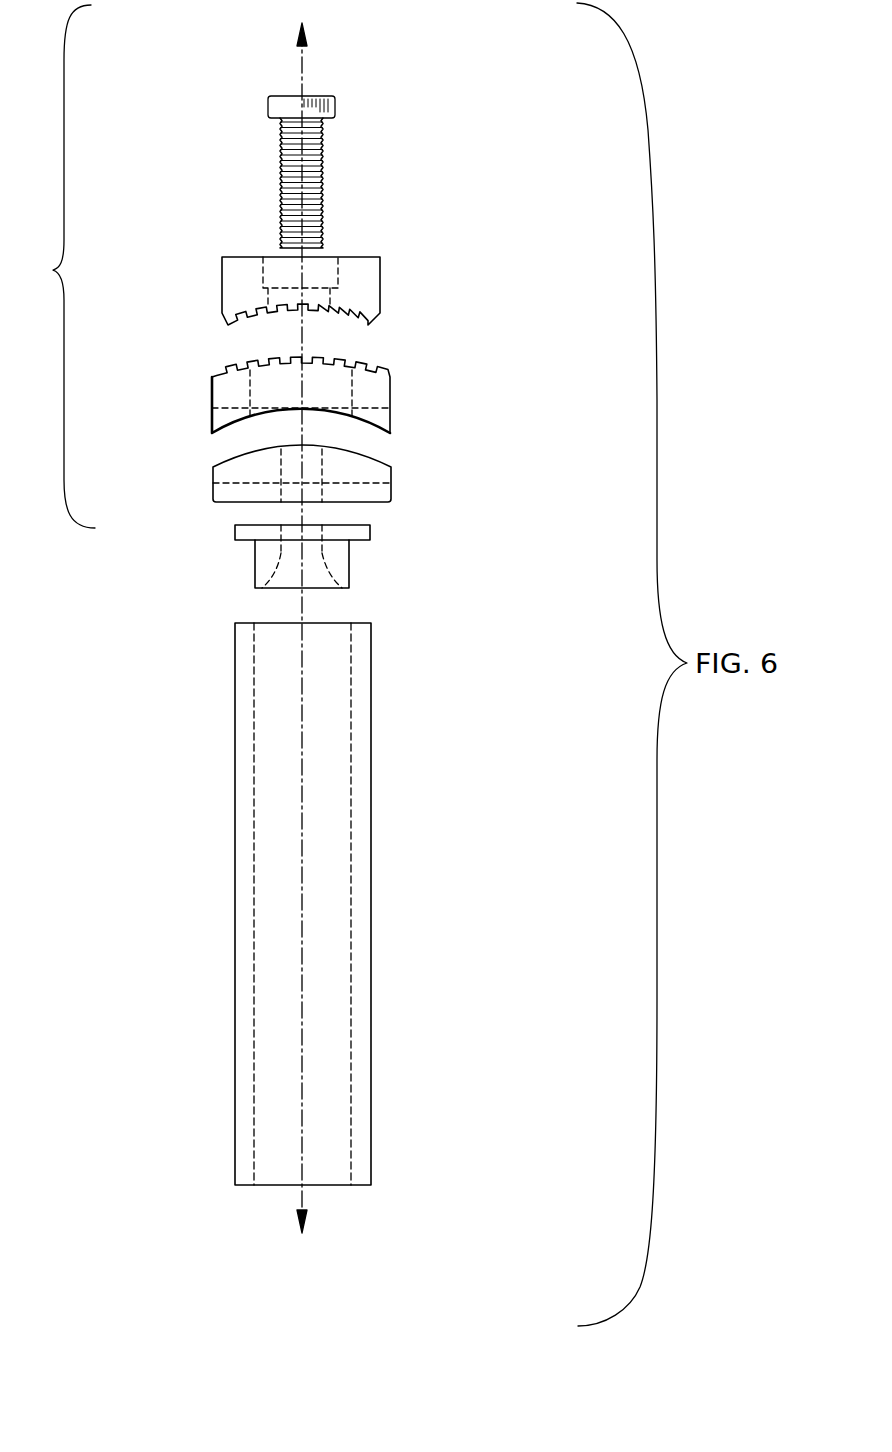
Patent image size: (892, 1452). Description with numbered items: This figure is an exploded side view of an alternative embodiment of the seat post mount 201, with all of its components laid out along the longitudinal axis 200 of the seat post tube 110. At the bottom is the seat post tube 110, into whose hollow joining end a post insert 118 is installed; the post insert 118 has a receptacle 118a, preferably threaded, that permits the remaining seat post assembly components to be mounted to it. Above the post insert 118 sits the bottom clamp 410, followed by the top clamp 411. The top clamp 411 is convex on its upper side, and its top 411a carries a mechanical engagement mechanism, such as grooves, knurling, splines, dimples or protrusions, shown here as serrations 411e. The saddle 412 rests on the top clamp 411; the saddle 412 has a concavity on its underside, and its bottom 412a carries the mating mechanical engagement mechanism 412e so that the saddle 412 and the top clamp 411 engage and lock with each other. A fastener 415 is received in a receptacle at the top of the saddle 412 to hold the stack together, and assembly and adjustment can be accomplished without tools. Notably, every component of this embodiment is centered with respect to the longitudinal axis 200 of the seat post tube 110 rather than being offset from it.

The seat post tube 110 is at (371, 840).
The post insert 118 is at (355, 544).
The receptacle 118a is at (312, 521).
The longitudinal axis 200 is at (303, 639).
The seat post mount 201 is at (57, 266).
The bottom clamp 410 is at (391, 477).
The top clamp 411 is at (312, 392).
The top of the top clamp 411a is at (370, 368).
The teeth of lower member 411e is at (237, 358).
The saddle 412 is at (305, 302).
The bottom of the saddle 412a is at (358, 320).
The mechanical engagement mechanism 412e is at (253, 323).
The fastener 415 is at (335, 110).